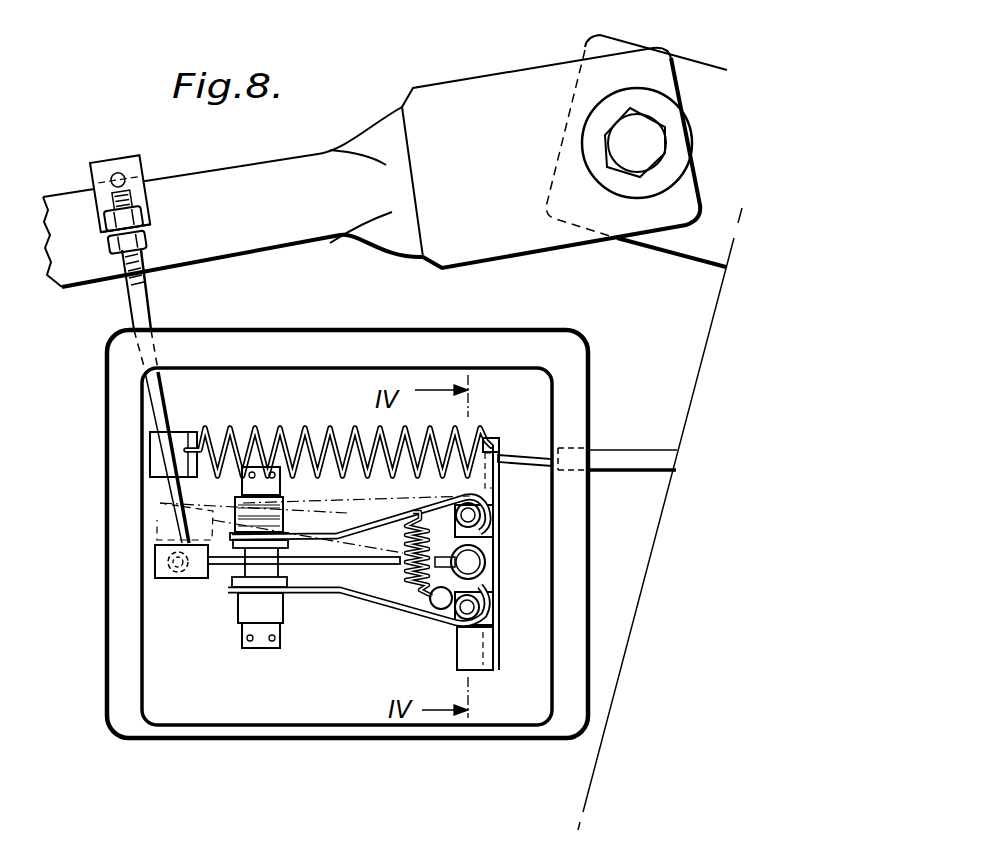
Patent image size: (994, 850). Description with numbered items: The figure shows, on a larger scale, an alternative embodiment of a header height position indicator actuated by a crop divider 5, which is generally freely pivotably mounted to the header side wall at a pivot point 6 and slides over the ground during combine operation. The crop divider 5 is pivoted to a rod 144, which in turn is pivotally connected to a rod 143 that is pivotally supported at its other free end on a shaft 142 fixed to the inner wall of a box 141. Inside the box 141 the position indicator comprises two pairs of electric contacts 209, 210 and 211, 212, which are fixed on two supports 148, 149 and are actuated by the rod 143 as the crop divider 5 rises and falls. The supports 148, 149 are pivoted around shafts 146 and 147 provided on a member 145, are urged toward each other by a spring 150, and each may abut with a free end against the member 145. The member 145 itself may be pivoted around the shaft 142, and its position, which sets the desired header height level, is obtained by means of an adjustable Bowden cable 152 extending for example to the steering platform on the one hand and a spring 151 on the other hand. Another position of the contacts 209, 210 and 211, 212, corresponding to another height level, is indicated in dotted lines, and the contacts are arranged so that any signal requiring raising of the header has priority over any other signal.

The crop divider 5 is at (193, 168).
The pivot point 6 is at (617, 131).
The box 141 is at (556, 385).
The shaft 142 is at (471, 562).
The rod 143 is at (378, 563).
The rod 144 is at (137, 302).
The member 145 is at (497, 485).
The shaft 146 is at (488, 537).
The shaft 147 is at (487, 582).
The support 148 is at (362, 497).
The support 149 is at (393, 612).
The spring 150 is at (440, 605).
The spring 151 is at (281, 428).
The adjustable Bowden cable 152 is at (528, 453).
The electric contact 209 is at (224, 645).
The electric contact 211 is at (245, 625).
The electric contact 210 is at (197, 590).
The electric contact 212 is at (181, 561).